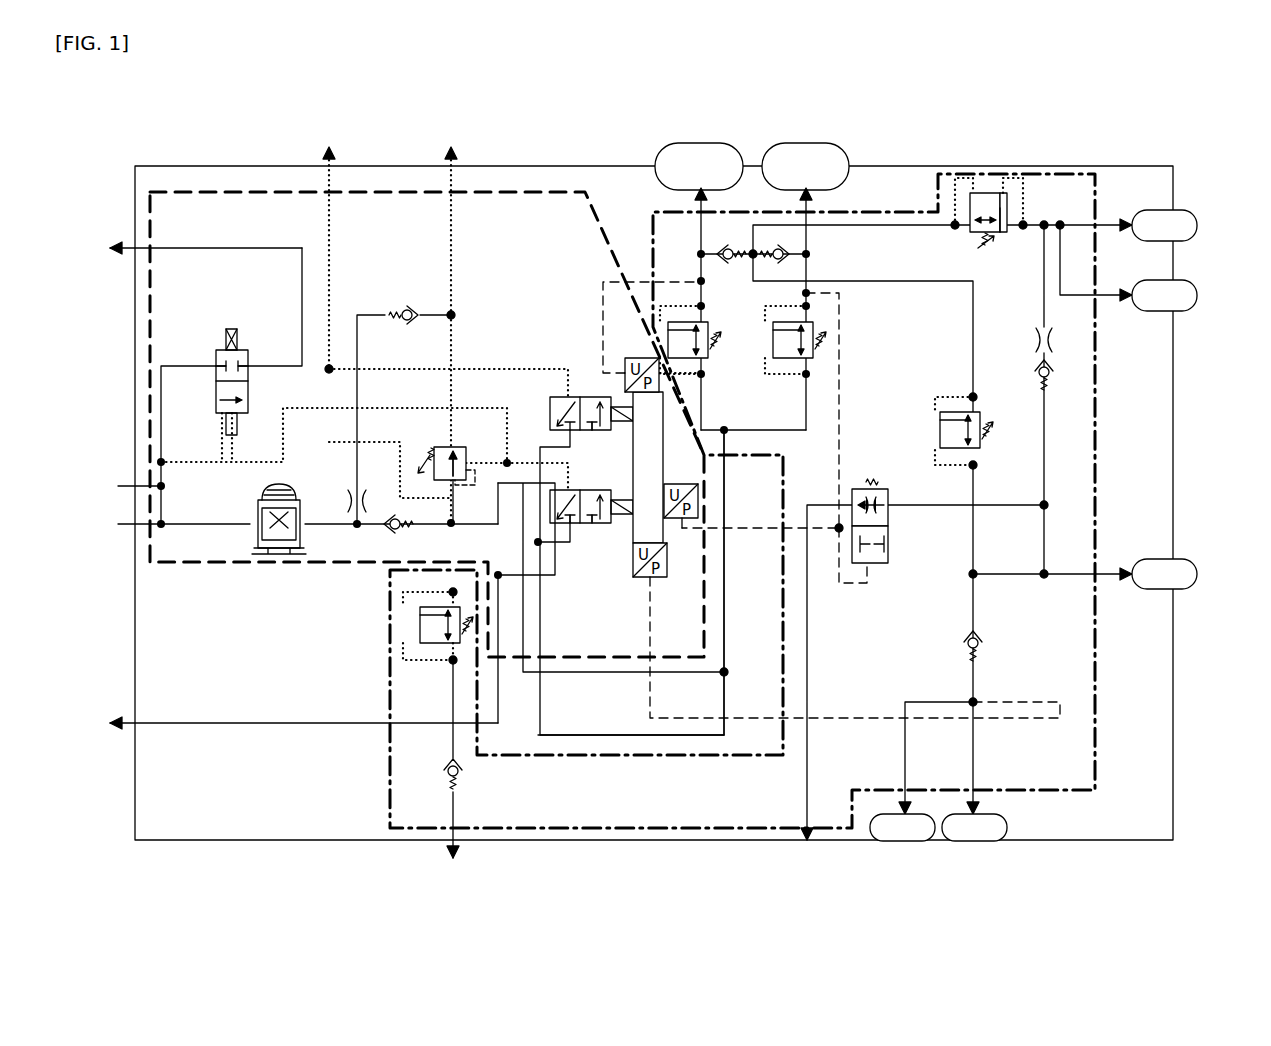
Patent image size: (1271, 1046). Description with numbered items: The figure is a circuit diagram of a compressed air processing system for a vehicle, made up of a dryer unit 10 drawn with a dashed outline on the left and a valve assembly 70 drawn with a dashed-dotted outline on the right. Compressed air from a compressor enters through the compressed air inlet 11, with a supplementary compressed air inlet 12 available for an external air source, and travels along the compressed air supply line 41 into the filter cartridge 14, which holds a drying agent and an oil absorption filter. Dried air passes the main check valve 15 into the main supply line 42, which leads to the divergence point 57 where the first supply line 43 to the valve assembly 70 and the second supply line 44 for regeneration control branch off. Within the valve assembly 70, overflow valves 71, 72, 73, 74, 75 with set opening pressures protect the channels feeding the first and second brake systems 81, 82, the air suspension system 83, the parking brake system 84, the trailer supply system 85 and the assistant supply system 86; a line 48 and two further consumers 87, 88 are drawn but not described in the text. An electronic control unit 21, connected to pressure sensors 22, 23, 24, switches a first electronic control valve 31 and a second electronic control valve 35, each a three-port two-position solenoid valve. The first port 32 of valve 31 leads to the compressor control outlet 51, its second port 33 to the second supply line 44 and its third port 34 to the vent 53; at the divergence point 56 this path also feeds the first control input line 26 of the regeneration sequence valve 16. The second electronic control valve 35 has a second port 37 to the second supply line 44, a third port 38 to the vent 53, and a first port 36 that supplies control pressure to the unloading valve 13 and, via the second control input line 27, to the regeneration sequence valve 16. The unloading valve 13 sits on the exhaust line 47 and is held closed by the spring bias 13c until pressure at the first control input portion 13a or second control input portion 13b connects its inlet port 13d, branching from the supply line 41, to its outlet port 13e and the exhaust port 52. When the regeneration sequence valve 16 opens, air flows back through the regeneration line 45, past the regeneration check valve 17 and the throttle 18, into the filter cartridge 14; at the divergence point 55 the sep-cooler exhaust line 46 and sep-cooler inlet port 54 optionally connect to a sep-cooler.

The dryer unit 10 is at (152, 290).
The compressed air inlet 11 is at (118, 486).
The supplementary compressed air inlet 12 is at (118, 524).
The unloading valve 13 is at (243, 384).
The first control input portion 13a is at (211, 424).
The second control input portion 13b is at (247, 437).
The spring bias 13c is at (234, 340).
The inlet port 13d is at (204, 358).
The outlet port 13e is at (262, 358).
The filter cartridge 14 is at (257, 541).
The main check valve 15 is at (388, 516).
The regeneration sequence valve 16 is at (438, 446).
The regeneration check valve 17 is at (398, 308).
The throttle 18 is at (346, 498).
The electronic control unit 21 is at (668, 420).
The pressure sensor 22 is at (630, 357).
The pressure sensor 23 is at (680, 483).
The pressure sensor 24 is at (654, 578).
The first control input line 26 is at (458, 483).
The second control input line 27 is at (509, 458).
The first electronic control valve 31 is at (580, 396).
The first port 32 is at (603, 397).
The second port 33 is at (607, 432).
The third port 34 is at (578, 470).
The second electronic control valve 35 is at (620, 516).
The first port 36 is at (601, 489).
The second port 37 is at (600, 524).
The third port 38 is at (577, 524).
The compressed air supply line 41 is at (212, 524).
The main supply line 42 is at (523, 524).
The first supply line 43 is at (727, 567).
The second supply line 44 is at (592, 734).
The regeneration line 45 is at (354, 312).
The sep-cooler exhaust line 46 is at (455, 238).
The exhaust line 47 is at (214, 248).
The control line 48 is at (512, 369).
The compressor control outlet 51 is at (326, 150).
The exhaust port 52 is at (118, 245).
The vent 53 is at (110, 721).
The sep-cooler inlet port 54 is at (448, 150).
The divergence point 55 is at (458, 316).
The divergence point 56 is at (326, 366).
The divergence point 57 is at (732, 672).
The valve assembly 70 is at (1098, 686).
The overflow valve 71 is at (706, 322).
The overflow valve 72 is at (790, 360).
The overflow valve 73 is at (420, 627).
The overflow valve 74 is at (940, 432).
The overflow valve 75 is at (970, 234).
The first brake system 81 is at (696, 142).
The second brake system 82 is at (802, 142).
The air suspension system 83 is at (460, 856).
The parking brake system 84 is at (901, 842).
The trailer supply system 85 is at (970, 842).
The assistant supply system 86 is at (1198, 572).
The consumer circuit 87 is at (1200, 227).
The consumer circuit 88 is at (1198, 295).